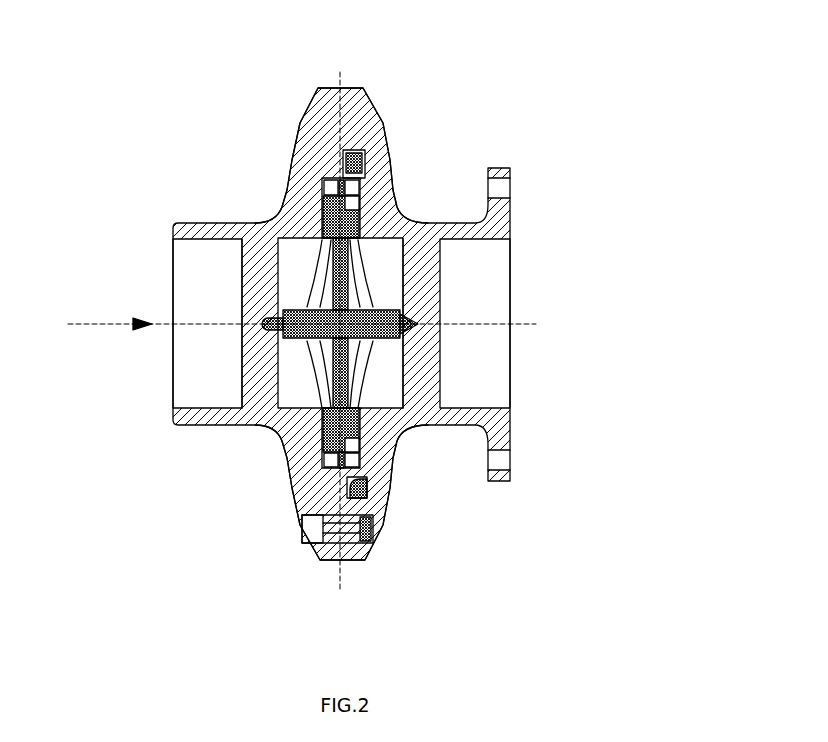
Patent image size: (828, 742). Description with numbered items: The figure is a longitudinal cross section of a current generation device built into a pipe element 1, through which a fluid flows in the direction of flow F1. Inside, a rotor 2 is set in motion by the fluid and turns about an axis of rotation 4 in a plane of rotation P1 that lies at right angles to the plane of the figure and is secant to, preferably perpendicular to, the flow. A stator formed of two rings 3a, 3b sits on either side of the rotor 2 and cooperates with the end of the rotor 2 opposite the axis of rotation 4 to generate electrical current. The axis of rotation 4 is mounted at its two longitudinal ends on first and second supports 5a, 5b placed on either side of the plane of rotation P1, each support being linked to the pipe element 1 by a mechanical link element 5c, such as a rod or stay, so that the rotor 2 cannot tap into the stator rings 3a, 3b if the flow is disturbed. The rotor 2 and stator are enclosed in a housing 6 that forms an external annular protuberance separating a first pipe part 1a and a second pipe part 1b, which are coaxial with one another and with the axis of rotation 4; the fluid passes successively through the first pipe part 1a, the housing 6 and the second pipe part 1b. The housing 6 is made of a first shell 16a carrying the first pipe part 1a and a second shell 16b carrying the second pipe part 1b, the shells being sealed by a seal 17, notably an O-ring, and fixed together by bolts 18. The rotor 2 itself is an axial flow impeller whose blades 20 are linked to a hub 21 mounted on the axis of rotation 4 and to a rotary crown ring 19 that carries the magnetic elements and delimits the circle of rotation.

The pipe element 1 is at (450, 213).
The first pipe part 1a is at (205, 226).
The second pipe part 1b is at (450, 417).
The rotor 2 is at (323, 272).
The stator ring 3a is at (362, 207).
The stator ring 3b is at (323, 193).
The axis of rotation 4 is at (415, 318).
The first support 5a is at (262, 306).
The second support 5b is at (418, 333).
The mechanical link element 5c is at (260, 373).
The housing 6 is at (323, 445).
The first shell 16a is at (305, 118).
The second shell 16b is at (392, 494).
The seal 17 is at (362, 496).
The bolts 18 is at (366, 534).
The rotary crown ring 19 is at (347, 222).
The blades 20 is at (323, 355).
The hub 21 is at (370, 310).
The plane of rotation P1 is at (327, 325).
The direction of flow F1 is at (302, 315).